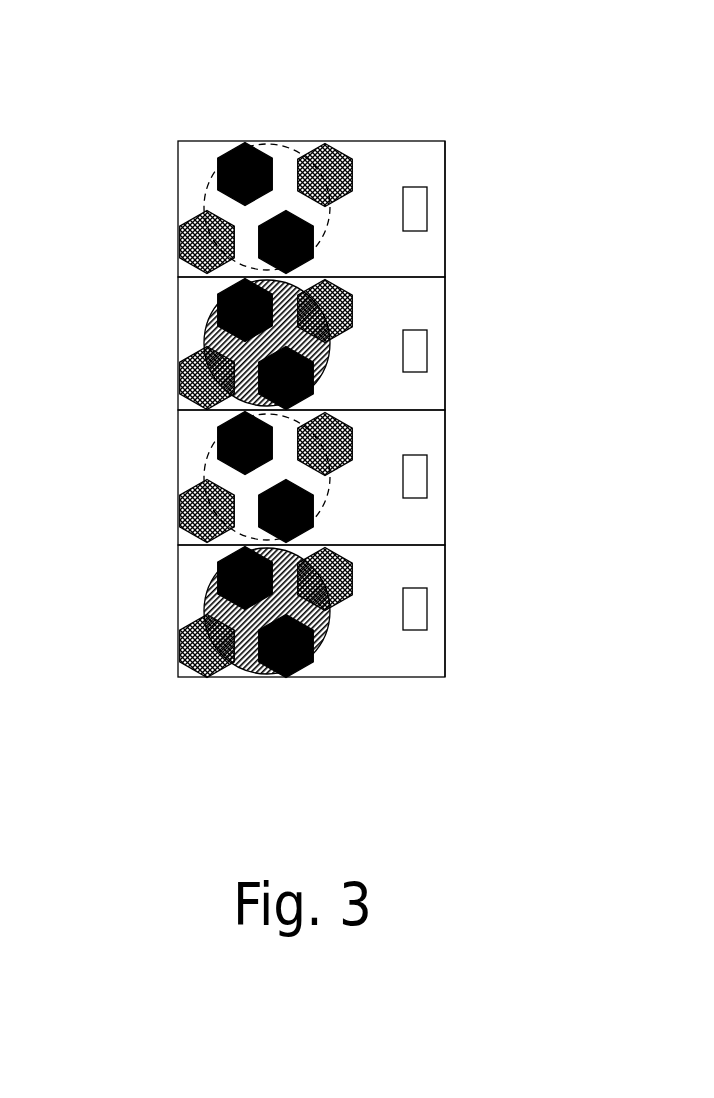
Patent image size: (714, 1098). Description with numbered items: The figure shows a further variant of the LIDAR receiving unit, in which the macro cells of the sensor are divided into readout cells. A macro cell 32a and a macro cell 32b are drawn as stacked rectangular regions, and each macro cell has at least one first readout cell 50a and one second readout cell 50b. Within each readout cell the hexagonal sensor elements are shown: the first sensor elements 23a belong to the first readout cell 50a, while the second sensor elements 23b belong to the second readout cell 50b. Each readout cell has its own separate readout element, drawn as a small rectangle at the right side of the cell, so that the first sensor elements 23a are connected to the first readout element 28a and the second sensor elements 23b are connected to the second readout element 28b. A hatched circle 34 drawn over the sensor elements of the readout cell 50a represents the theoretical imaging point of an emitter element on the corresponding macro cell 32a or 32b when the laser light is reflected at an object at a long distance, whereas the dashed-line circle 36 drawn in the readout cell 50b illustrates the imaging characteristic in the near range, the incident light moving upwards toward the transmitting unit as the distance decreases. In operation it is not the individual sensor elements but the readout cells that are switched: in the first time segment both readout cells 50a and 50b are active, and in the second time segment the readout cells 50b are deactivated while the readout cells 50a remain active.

The first sensor elements 23a is at (178, 369).
The second sensor elements 23b is at (317, 143).
The first readout element 28a is at (427, 345).
The second readout element 28b is at (415, 211).
The macro cell 32a is at (447, 573).
The macro cell 32b is at (447, 171).
The circle 34 is at (210, 322).
The dashed-line circle 36 is at (207, 186).
The first readout cell 50a is at (415, 392).
The second readout cell 50b is at (410, 155).